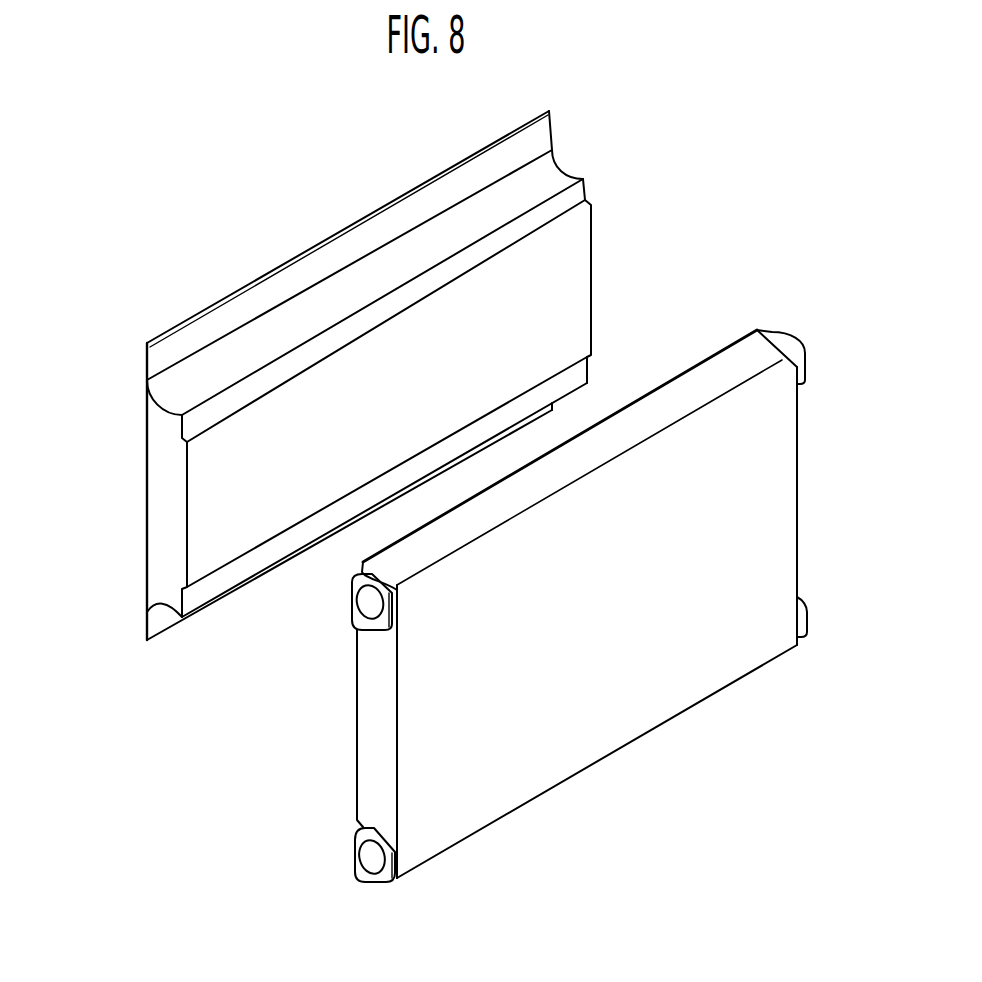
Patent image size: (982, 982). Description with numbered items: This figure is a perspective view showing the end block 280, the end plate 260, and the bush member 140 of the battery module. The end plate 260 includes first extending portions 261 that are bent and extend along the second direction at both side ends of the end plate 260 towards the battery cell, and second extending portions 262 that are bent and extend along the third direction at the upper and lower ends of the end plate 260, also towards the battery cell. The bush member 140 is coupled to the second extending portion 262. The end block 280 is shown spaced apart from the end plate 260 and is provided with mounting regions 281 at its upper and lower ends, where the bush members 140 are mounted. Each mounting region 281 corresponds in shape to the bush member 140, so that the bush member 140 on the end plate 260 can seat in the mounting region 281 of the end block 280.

The bush member 140 is at (380, 878).
The end plate 260 is at (566, 620).
The first extending portion 261 is at (365, 712).
The second extending portion 262 is at (710, 367).
The end block 280 is at (324, 375).
The mounting region 281 is at (412, 210).